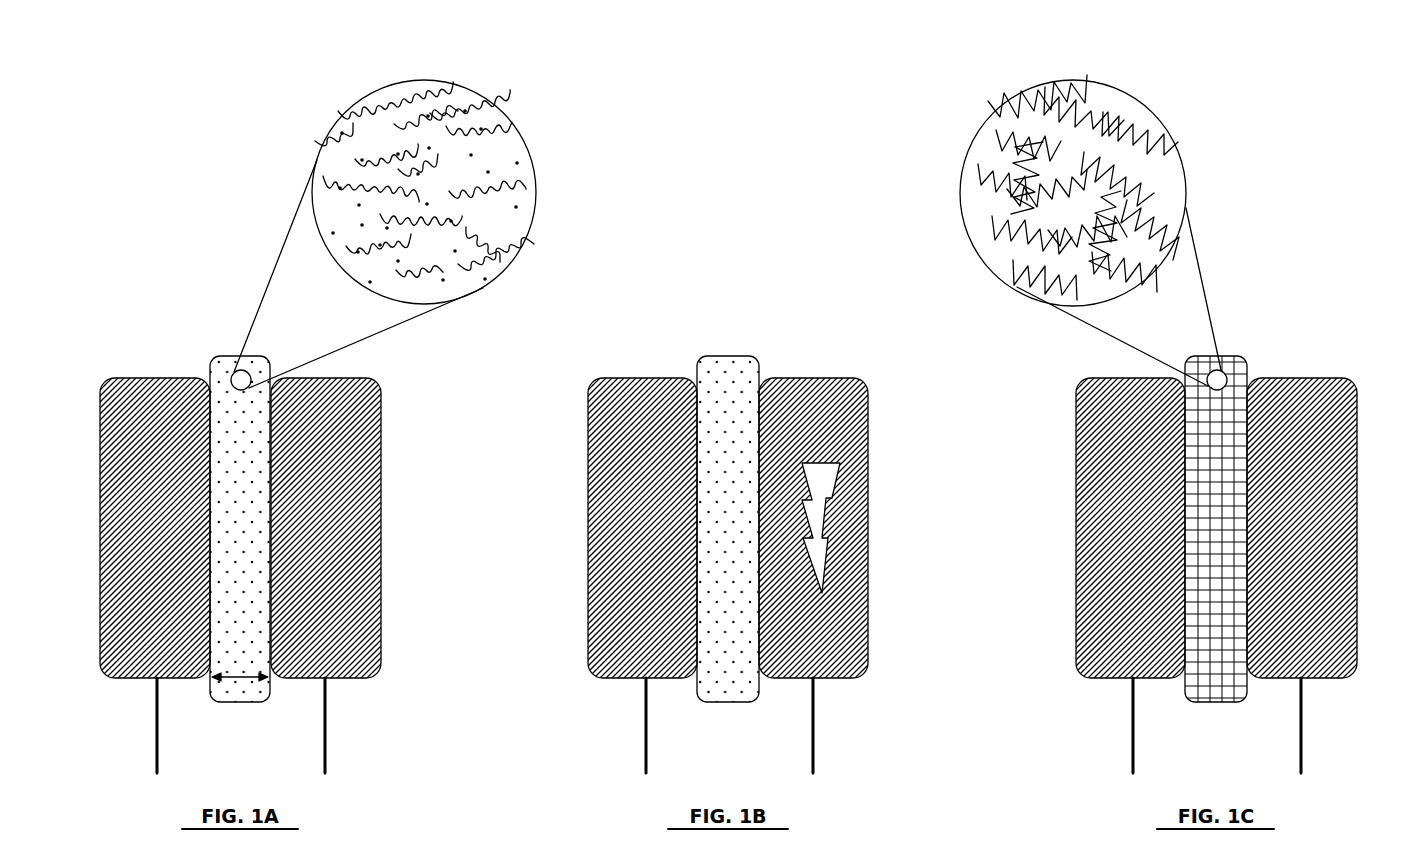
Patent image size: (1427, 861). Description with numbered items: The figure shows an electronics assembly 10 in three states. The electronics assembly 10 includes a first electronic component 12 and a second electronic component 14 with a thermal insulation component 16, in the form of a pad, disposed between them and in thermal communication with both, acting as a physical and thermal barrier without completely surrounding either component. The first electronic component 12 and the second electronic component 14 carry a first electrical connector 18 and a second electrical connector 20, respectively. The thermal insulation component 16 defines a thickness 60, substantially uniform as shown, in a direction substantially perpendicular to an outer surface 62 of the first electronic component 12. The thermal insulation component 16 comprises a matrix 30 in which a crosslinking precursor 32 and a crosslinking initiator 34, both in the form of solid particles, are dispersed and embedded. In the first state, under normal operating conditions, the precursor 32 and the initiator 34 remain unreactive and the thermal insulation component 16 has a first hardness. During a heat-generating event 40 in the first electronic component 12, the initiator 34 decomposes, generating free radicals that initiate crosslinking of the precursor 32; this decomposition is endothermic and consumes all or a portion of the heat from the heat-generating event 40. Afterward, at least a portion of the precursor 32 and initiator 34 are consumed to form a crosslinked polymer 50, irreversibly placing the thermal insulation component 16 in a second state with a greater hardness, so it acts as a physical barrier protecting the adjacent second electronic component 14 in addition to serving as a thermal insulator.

In FIG. 1A, the electronics assembly 10 is at (102, 320).
In FIG. 1B, the electronics assembly 10 is at (582, 348).
In FIG. 1C, the electronics assembly 10 is at (1327, 336).
In FIG. 1A, the first electronic component 12 is at (365, 473).
In FIG. 1B, the first electronic component 12 is at (847, 432).
In FIG. 1C, the first electronic component 12 is at (1327, 496).
In FIG. 1A, the second electronic component 14 is at (128, 497).
In FIG. 1B, the second electronic component 14 is at (600, 465).
In FIG. 1C, the second electronic component 14 is at (1103, 483).
In FIG. 1A, the thermal insulation component 16 is at (222, 370).
In FIG. 1B, the thermal insulation component 16 is at (737, 368).
In FIG. 1C, the thermal insulation component 16 is at (1240, 372).
In FIG. 1A, the first electrical connector 18 is at (327, 752).
In FIG. 1B, the first electrical connector 18 is at (815, 740).
In FIG. 1C, the first electrical connector 18 is at (1303, 740).
In FIG. 1A, the second electrical connector 20 is at (155, 747).
In FIG. 1B, the second electrical connector 20 is at (644, 748).
In FIG. 1C, the second electrical connector 20 is at (1131, 748).
In FIG. 1A, the matrix 30 is at (510, 130).
In FIG. 1C, the matrix 30 is at (1152, 123).
In FIG. 1A, the crosslinking precursor 32 is at (320, 145).
In FIG. 1A, the crosslinking initiator 34 is at (375, 108).
In FIG. 1B, the heat-generating event 40 is at (830, 490).
In FIG. 1C, the crosslinked polymer 50 is at (1003, 168).
In FIG. 1A, the thickness 60 is at (237, 682).
In FIG. 1A, the outer surface 62 is at (270, 622).